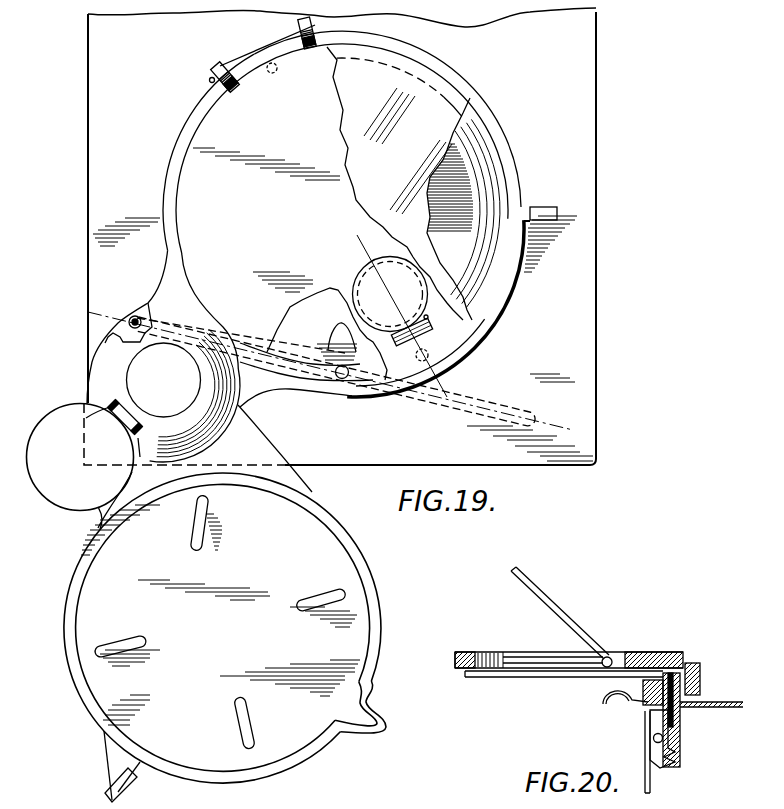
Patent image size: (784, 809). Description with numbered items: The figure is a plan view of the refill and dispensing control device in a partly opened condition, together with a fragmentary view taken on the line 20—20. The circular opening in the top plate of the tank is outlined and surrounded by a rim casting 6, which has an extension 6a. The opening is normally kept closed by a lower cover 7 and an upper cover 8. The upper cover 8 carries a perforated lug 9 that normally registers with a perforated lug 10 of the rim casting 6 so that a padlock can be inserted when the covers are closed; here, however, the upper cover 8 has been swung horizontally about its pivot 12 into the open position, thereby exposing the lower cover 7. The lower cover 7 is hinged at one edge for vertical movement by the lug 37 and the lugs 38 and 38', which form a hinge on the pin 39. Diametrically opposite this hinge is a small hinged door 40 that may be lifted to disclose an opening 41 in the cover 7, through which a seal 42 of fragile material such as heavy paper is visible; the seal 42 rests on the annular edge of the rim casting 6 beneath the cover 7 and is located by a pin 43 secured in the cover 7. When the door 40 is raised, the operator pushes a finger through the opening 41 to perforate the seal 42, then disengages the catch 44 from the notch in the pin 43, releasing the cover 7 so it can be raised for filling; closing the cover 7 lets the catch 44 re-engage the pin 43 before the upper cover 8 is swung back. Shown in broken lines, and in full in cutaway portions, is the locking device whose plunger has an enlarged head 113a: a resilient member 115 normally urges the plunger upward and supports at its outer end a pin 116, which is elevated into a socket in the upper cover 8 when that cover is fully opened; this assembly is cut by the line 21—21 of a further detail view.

In FIG. 19, the rim casting 6 is at (508, 163).
In FIG. 19, the extension of the rim casting 6a is at (280, 387).
In FIG. 19, the lower cover 7 is at (183, 198).
In FIG. 19, the upper cover 8 is at (347, 562).
In FIG. 19, the perforated lug 9 is at (120, 787).
In FIG. 19, the perforated lug 10 is at (556, 212).
In FIG. 19, the pivot 12 is at (187, 383).
In FIG. 19, the section line 20— 20 is at (364, 258).
In FIG. 19, the section line 21— 21 is at (104, 314).
In FIG. 19, the lug 37 is at (250, 55).
In FIG. 19, the lug 38 is at (193, 75).
In FIG. 19, the lug 38' is at (270, 60).
In FIG. 19, the pin 39 is at (212, 80).
In FIG. 19, the hinged door 40 is at (403, 288).
In FIG. 20, the hinged door 40 is at (547, 593).
In FIG. 20, the opening 41 is at (543, 665).
In FIG. 20, the seal 42 is at (508, 678).
In FIG. 20, the pin 43 is at (668, 657).
In FIG. 20, the catch 44 is at (647, 721).
In FIG. 19, the enlarged head of the plunger 113a is at (345, 378).
In FIG. 19, the resilient member 115 is at (460, 412).
In FIG. 19, the pin 116 is at (126, 333).